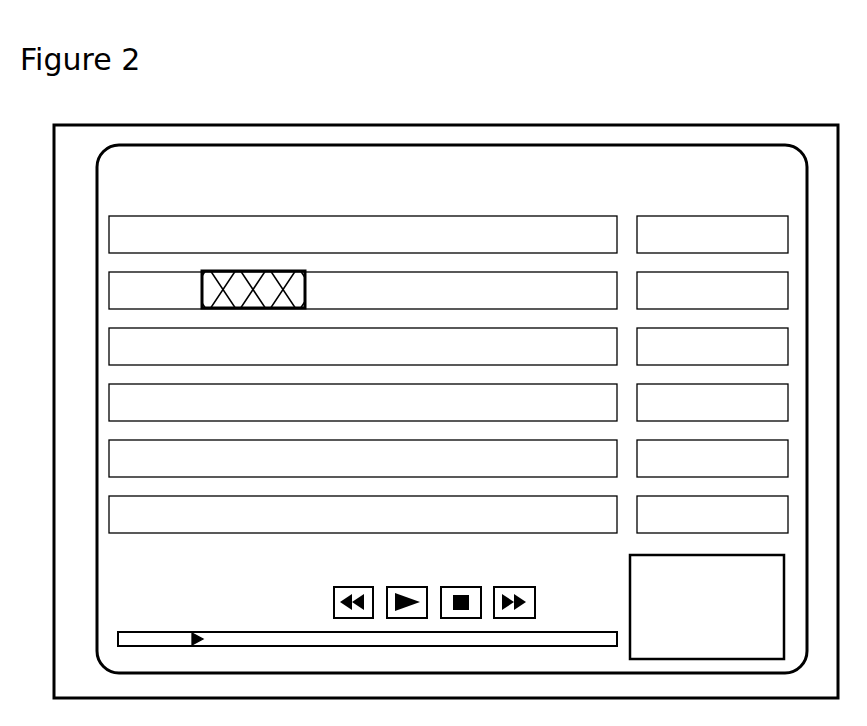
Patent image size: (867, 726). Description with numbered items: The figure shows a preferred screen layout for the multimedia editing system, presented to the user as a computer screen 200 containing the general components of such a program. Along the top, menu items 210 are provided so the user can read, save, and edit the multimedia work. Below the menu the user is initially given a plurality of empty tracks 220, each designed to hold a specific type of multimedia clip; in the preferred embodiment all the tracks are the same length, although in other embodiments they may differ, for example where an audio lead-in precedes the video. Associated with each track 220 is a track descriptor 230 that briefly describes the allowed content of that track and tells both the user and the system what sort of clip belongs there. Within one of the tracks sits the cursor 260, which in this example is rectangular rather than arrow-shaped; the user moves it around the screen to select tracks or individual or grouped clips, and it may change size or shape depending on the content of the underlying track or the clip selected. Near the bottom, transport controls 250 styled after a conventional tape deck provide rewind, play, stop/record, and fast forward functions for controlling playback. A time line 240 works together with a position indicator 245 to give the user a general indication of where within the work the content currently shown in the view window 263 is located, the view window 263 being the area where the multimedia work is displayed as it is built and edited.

The computer screen 200 is at (703, 92).
The menu items 210 is at (140, 158).
The tracks 220 is at (573, 216).
The track descriptor 230 is at (710, 216).
The time line 240 is at (296, 632).
The position indicator 245 is at (188, 639).
The transport controls 250 is at (497, 580).
The cursor 260 is at (278, 271).
The view window 263 is at (629, 581).